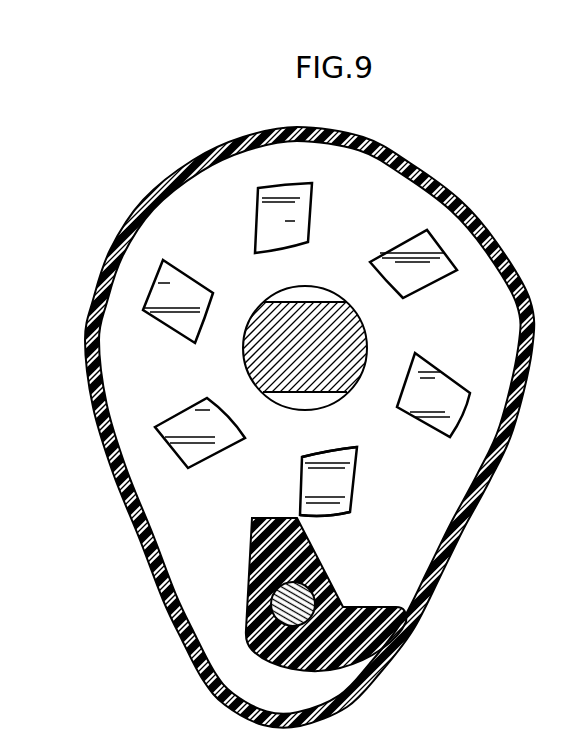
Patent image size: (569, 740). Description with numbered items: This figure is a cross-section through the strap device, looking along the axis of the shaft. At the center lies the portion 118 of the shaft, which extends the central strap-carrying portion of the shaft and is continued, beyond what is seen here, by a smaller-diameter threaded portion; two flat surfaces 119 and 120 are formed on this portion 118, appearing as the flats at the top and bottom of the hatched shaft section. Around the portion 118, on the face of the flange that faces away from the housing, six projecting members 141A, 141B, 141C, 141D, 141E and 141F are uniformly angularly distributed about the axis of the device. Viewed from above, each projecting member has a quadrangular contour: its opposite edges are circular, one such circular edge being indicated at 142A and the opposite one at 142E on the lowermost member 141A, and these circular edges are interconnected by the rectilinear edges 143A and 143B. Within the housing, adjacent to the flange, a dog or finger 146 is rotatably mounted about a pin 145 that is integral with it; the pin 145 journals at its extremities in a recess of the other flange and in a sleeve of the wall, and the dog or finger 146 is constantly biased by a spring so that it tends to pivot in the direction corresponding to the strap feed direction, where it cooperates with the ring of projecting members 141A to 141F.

The portion 118 is at (332, 337).
The flat surface 119 is at (307, 303).
The flat surface 120 is at (297, 400).
The projecting member 141A is at (388, 483).
The projecting member 141B is at (435, 405).
The projecting member 141C is at (410, 262).
The projecting member 141D is at (287, 213).
The projecting member 141E is at (167, 290).
The projecting member 141F is at (192, 440).
The circular edge 142A is at (327, 453).
The inner face of pole segment 142E is at (340, 517).
The rectilinear edge 143A is at (300, 480).
The rectilinear edge 143B is at (357, 480).
The pin 145 is at (278, 605).
The dog or finger 146 is at (330, 623).